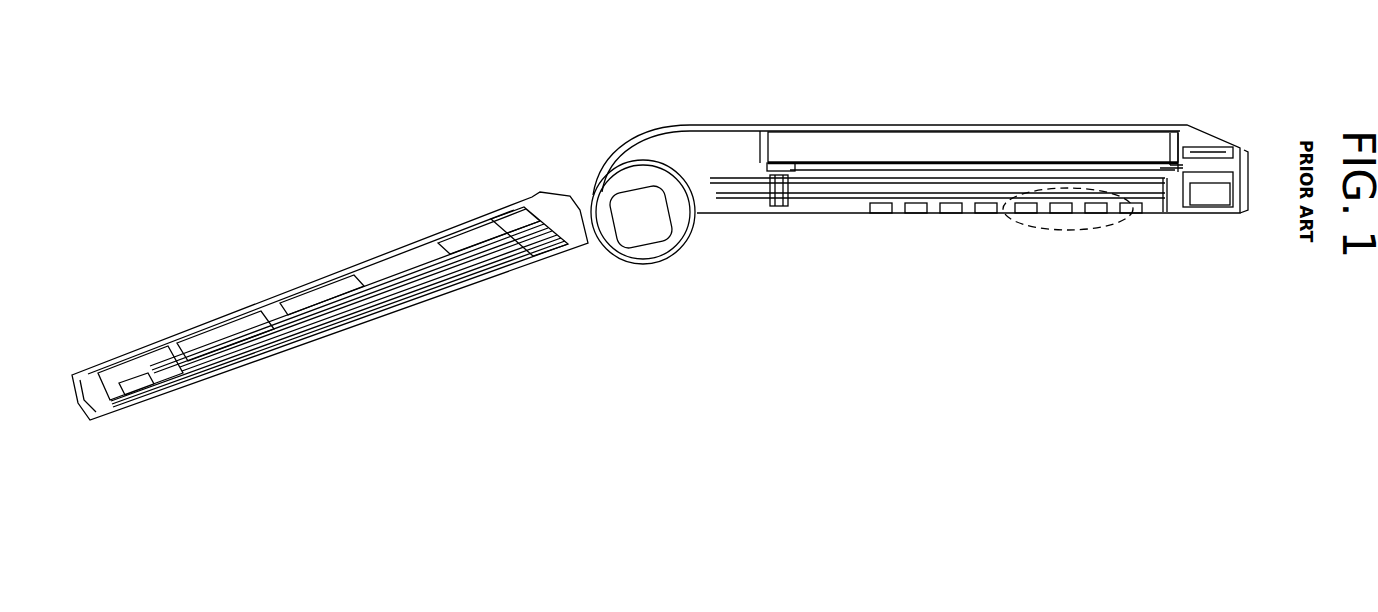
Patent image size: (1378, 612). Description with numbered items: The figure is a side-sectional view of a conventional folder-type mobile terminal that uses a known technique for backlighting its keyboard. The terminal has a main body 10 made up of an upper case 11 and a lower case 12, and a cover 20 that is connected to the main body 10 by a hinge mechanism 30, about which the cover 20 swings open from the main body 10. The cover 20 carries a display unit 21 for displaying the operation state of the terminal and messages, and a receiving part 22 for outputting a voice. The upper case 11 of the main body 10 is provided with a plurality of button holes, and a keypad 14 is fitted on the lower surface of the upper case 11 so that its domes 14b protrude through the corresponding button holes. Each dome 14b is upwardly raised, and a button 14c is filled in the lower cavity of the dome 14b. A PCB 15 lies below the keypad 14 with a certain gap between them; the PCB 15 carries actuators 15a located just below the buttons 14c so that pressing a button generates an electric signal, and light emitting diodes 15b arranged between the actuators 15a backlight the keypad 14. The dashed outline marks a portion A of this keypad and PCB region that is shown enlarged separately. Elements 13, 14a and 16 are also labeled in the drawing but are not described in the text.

The main body 10 is at (889, 116).
The upper case 11 is at (1247, 213).
The lower case 12 is at (1238, 145).
The end block 13 is at (1210, 207).
The keypad 14 is at (907, 212).
The contact 14a is at (1040, 213).
The dome 14b is at (980, 213).
The button 14c is at (1046, 213).
The PCB 15 is at (1142, 195).
The actuator 15a is at (1092, 198).
The light emitting diode 15b is at (1067, 198).
The display panel 16 is at (992, 145).
The cover 20 is at (252, 298).
The display unit 21 is at (303, 333).
The receiving part 22 is at (123, 390).
The hinge mechanism 30 is at (647, 232).
The portion A is at (1098, 228).